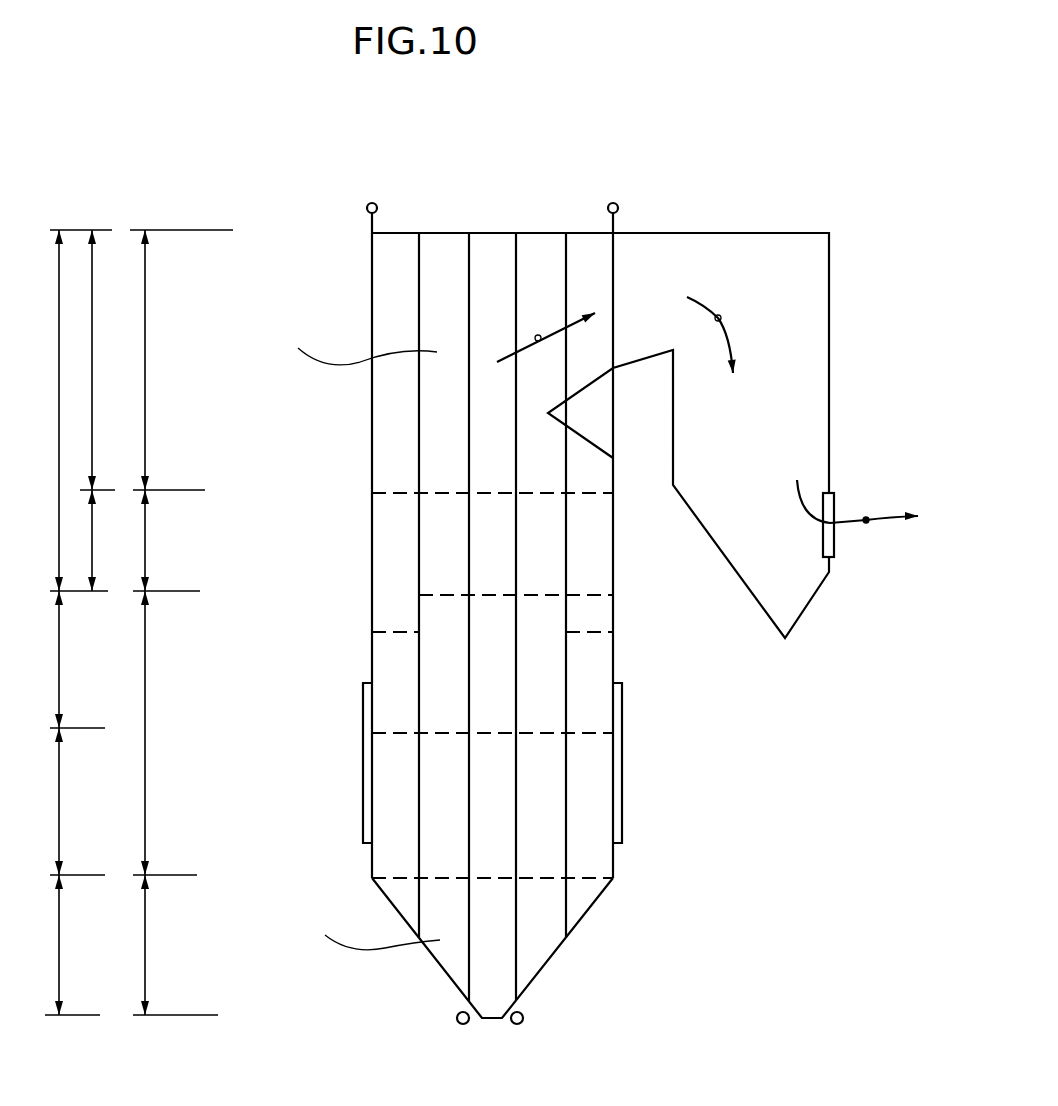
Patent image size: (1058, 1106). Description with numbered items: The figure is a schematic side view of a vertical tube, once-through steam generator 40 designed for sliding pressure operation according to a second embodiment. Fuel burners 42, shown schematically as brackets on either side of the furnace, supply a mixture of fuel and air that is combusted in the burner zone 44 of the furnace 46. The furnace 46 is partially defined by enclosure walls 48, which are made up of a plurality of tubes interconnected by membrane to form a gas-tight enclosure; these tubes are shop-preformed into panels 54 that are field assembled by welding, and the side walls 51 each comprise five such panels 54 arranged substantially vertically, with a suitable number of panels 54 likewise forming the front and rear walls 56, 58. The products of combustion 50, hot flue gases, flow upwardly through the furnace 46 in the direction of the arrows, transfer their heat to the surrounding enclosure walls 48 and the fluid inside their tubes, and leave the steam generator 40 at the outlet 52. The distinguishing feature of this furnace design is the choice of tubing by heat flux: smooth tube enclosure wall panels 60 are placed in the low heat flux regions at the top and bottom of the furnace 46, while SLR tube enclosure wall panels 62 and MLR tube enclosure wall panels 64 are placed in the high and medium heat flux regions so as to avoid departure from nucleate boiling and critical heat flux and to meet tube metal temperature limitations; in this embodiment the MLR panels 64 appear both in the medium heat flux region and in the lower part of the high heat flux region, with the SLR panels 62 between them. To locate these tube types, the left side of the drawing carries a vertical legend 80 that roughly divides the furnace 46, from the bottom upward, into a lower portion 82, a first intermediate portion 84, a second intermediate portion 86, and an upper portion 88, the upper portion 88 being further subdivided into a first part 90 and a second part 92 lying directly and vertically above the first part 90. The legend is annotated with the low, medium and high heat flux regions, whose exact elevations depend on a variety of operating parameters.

The steam generator 40 is at (660, 205).
The fuel burners 42 is at (363, 689).
The burner zone 44 is at (492, 811).
The furnace 46 is at (385, 501).
The enclosure walls 48 is at (497, 245).
The products of combustion 50 is at (538, 335).
The side walls 51 is at (446, 273).
The outlet 52 is at (828, 548).
The panels 54 is at (552, 588).
The front wall 56 is at (360, 611).
The rear wall 58 is at (630, 552).
The smooth tube enclosure wall panels 60 is at (460, 332).
The SLR tube enclosure wall panels 62 is at (458, 638).
The MLR tube enclosure wall panels 64 is at (458, 528).
The vertical legend 80 is at (100, 212).
The lower portion 82 is at (102, 803).
The first intermediate portion 84 is at (74, 801).
The second intermediate portion 86 is at (75, 659).
The upper portion 88 is at (75, 410).
The first part 90 is at (109, 540).
The second part 92 is at (118, 410).